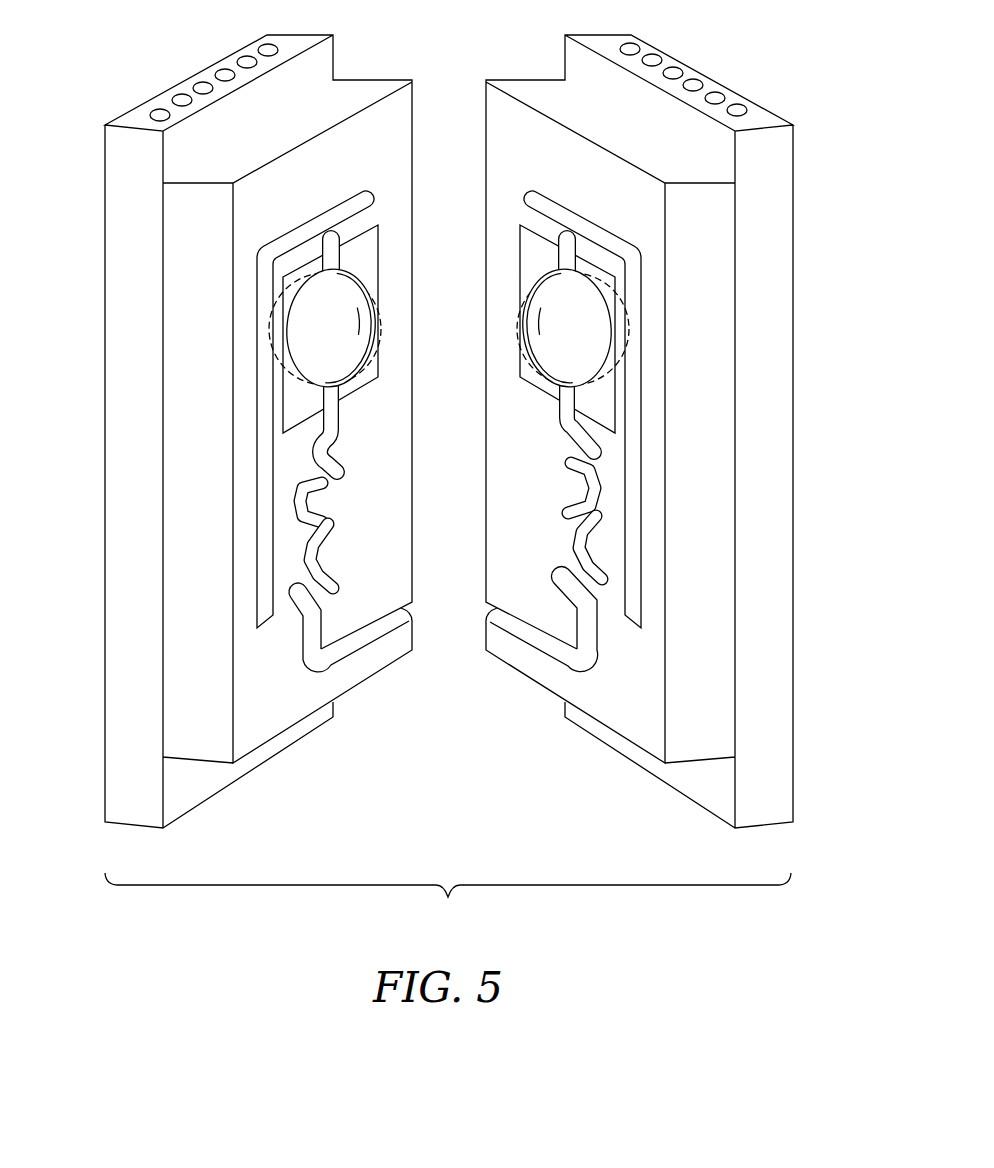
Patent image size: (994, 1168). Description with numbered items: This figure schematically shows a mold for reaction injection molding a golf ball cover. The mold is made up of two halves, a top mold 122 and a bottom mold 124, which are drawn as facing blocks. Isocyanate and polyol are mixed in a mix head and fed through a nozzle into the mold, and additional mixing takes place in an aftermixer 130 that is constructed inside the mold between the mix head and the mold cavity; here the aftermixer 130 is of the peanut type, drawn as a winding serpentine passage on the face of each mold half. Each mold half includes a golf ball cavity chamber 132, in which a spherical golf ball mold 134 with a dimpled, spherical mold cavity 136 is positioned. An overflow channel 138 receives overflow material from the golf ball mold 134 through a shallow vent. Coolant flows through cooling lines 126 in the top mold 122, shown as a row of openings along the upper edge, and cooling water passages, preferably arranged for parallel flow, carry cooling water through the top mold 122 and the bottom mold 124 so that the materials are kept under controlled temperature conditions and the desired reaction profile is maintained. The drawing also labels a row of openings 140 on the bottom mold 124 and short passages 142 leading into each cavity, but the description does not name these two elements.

The top mold 122 is at (127, 568).
The bottom mold 124 is at (780, 572).
The cooling lines 126 is at (223, 75).
The alignment holes of second mold half 140 is at (737, 110).
The aftermixer 130 is at (565, 492).
The golf ball cavity chamber 132 is at (273, 294).
The spherical golf ball mold 134 is at (552, 362).
The dimpled, spherical mold cavity 136 is at (553, 337).
The overflow channel 138 is at (527, 193).
The inlet passage 142 is at (330, 237).